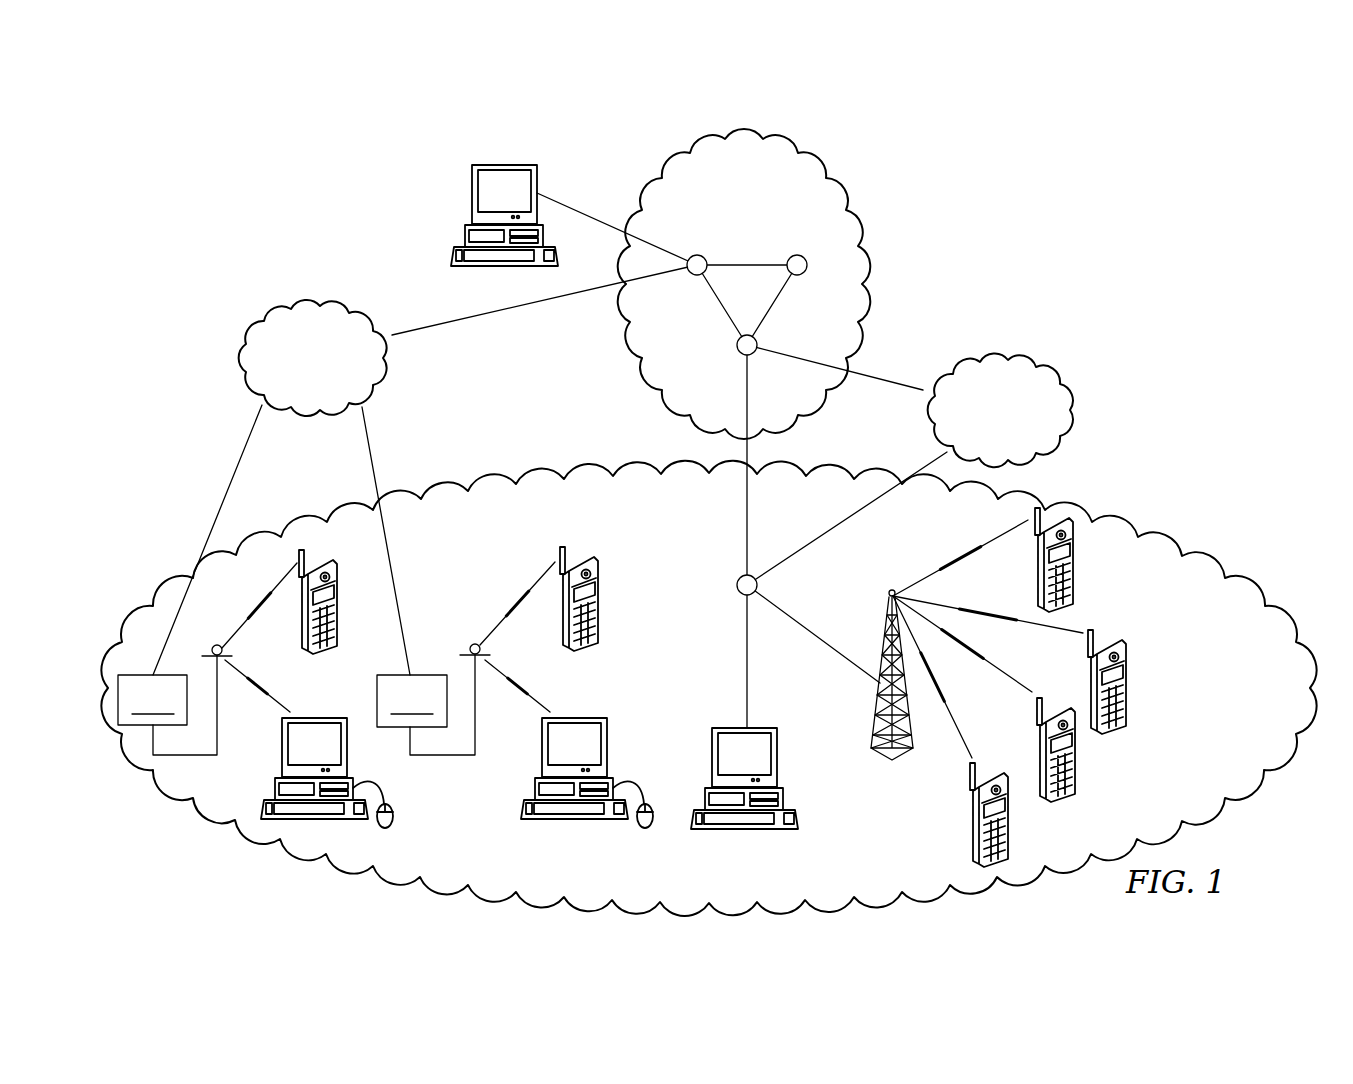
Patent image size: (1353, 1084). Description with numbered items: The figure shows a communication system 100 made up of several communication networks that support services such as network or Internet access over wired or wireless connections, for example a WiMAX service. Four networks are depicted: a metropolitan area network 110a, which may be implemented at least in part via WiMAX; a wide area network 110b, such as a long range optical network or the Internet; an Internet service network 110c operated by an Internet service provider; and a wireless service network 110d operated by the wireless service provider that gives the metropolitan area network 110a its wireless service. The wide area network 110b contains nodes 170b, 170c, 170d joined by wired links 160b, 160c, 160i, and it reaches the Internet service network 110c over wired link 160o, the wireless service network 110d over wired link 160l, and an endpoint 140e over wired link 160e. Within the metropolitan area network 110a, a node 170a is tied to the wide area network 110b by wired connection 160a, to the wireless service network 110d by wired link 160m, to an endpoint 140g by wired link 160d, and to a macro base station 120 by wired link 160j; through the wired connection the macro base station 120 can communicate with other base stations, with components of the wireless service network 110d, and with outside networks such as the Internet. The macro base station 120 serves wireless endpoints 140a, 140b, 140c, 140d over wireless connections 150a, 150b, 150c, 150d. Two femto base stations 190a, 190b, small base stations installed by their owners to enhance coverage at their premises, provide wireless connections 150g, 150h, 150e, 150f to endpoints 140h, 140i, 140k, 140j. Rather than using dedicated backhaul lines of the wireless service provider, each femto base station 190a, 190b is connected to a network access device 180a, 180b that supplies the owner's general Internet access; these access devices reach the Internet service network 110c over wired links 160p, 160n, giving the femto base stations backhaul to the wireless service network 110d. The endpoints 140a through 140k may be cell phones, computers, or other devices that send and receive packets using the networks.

The communication system 100 is at (361, 239).
The MAN network 110a is at (545, 462).
The WAN network 110b is at (686, 150).
The Internet service network (ISN) 110c is at (235, 345).
The wireless service network (WSN) 110d is at (1081, 410).
The macro base station (mBS) 120 is at (871, 722).
The endpoint 140a is at (1009, 827).
The endpoint 140b is at (1076, 762).
The endpoint 140c is at (1128, 696).
The endpoint 140d is at (1075, 571).
The endpoint 140e is at (503, 163).
The endpoint 140g is at (785, 800).
The endpoint 140h is at (325, 655).
The endpoint 140i is at (272, 791).
The endpoint 140j is at (527, 790).
The endpoint 140k is at (585, 653).
The wireless connection 150a is at (966, 747).
The wireless connection 150b is at (1010, 676).
The wireless connection 150c is at (1012, 618).
The wireless connection 150d is at (980, 546).
The wireless connection 150e is at (529, 591).
The wireless connection 150f is at (529, 695).
The wireless connection 150g is at (262, 601).
The wireless connection 150h is at (270, 698).
The wired connection 160a is at (746, 530).
The wired link 160b is at (719, 306).
The wired link 160c is at (774, 308).
The wired link 160d is at (746, 660).
The wired link 160e is at (590, 217).
The wired link 160i is at (757, 263).
The wired link 160j is at (818, 637).
The wired link 160l is at (886, 381).
The wired link 160m is at (822, 532).
The wired link 160n is at (372, 458).
The wired link 160o is at (540, 302).
The wired link 160p is at (239, 458).
The node 170a is at (737, 580).
The node 170b is at (736, 349).
The node 170c is at (696, 255).
The node 170d is at (797, 255).
The network access device 180a is at (167, 705).
The network access device 180b is at (426, 705).
The femto base station (fBS) 190a is at (233, 655).
The femto base station (fBS) 190b is at (466, 651).